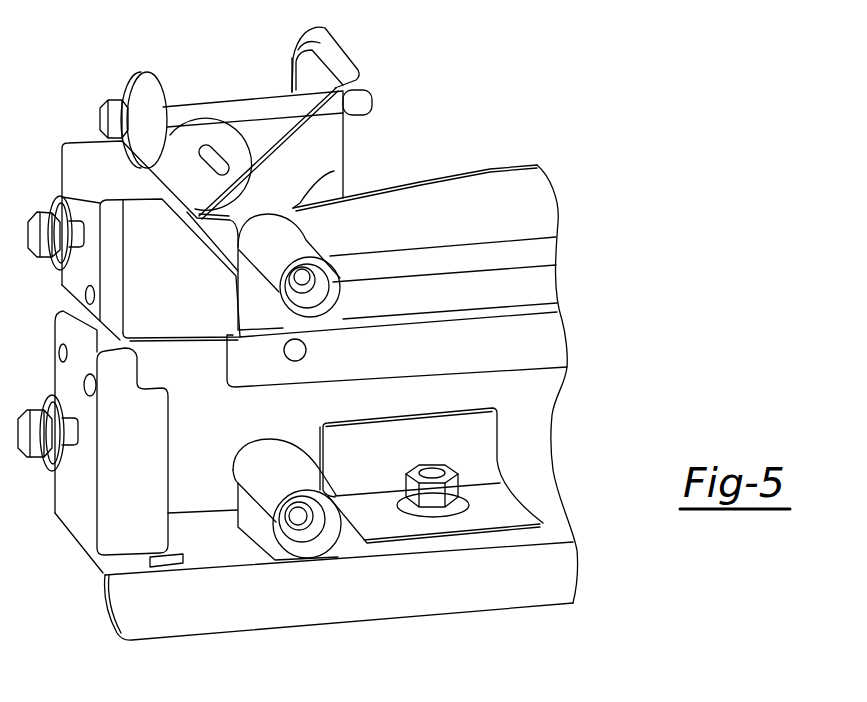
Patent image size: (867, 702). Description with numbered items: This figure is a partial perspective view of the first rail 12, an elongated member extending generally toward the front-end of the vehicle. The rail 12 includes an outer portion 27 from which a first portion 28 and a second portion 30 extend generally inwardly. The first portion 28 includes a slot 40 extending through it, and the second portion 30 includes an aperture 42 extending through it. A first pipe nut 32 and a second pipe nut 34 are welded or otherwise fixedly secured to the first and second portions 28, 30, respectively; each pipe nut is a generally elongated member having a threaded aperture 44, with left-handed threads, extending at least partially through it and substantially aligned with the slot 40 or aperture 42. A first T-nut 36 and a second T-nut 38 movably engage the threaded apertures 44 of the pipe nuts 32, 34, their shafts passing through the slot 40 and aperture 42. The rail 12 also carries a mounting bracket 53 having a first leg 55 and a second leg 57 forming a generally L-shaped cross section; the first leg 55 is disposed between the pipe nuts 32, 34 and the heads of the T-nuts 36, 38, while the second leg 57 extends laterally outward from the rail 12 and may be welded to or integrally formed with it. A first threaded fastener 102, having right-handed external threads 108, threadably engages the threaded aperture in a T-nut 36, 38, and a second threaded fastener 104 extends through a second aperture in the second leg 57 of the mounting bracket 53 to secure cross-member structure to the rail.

The first rail 12 is at (518, 172).
The outer portion 27 is at (455, 197).
The first portion 28 is at (543, 283).
The second portion 30 is at (200, 537).
The first pipe nut 32 is at (258, 227).
The second pipe nut 34 is at (258, 470).
The first T-nut 36 is at (323, 291).
The second T-nut 38 is at (316, 528).
The slot 40 is at (334, 171).
The aperture 42 is at (280, 438).
The threaded aperture 44 is at (313, 305).
The mounting bracket 53 is at (362, 55).
The first leg 55 is at (336, 142).
The second leg 57 is at (292, 49).
The first threaded fastener 102 is at (191, 146).
The second threaded fastener 104 is at (213, 110).
The external threads 108 is at (215, 155).